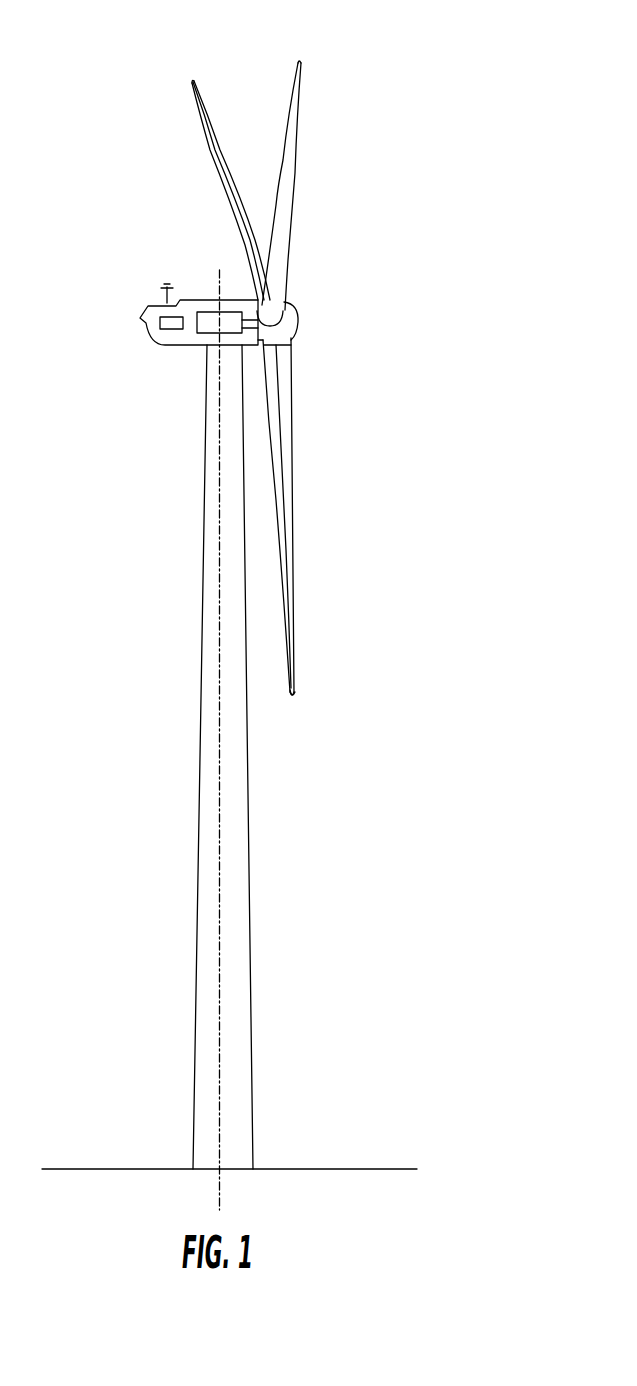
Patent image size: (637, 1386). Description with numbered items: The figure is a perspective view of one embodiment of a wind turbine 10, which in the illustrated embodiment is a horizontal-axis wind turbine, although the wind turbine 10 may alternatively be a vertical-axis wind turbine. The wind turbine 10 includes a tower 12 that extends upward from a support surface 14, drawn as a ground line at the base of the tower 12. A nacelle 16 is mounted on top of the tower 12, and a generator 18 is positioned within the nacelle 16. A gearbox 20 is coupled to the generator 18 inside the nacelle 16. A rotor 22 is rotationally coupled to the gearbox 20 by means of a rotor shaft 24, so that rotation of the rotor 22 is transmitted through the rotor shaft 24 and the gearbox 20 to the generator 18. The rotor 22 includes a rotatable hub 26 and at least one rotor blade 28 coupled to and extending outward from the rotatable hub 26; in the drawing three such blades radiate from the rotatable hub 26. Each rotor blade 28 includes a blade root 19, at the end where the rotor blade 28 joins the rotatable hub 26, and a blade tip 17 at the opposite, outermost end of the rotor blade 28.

The wind turbine 10 is at (435, 113).
The tower 12 is at (197, 883).
The support surface 14 is at (118, 1169).
The nacelle 16 is at (158, 343).
The blade tip 17 is at (296, 698).
The generator 18 is at (160, 303).
The blade root 19 is at (287, 357).
The gearbox 20 is at (200, 300).
The rotor 22 is at (302, 298).
The rotor shaft 24 is at (259, 333).
The rotatable hub 26 is at (297, 330).
The rotor blade 28 is at (210, 150).